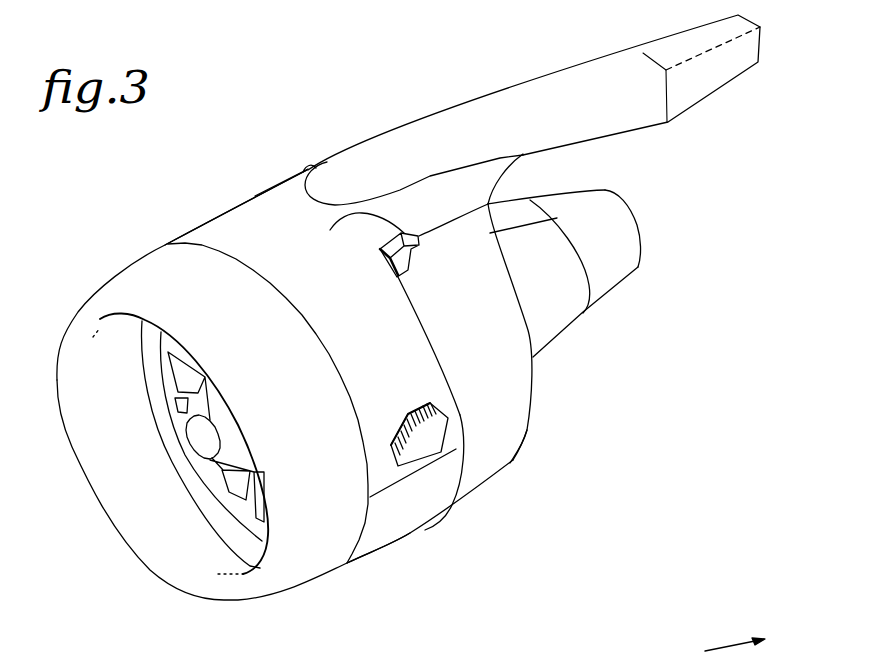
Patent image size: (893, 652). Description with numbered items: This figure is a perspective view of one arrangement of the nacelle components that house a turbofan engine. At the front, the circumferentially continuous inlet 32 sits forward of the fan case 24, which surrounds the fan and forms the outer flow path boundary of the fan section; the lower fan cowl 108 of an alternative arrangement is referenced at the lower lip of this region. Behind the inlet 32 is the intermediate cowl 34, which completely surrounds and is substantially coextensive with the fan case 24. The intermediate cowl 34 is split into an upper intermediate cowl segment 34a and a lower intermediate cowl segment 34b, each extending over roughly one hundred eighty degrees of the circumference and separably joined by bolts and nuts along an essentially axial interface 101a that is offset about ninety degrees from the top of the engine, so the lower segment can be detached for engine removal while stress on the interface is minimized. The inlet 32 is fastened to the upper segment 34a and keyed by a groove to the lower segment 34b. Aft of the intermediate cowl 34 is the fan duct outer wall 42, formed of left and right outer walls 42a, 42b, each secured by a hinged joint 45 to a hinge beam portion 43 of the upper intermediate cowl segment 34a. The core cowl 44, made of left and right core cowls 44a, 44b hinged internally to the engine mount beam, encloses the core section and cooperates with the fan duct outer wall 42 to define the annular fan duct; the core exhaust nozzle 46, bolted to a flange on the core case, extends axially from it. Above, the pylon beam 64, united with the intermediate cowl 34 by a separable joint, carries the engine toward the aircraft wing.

The fan case 24 is at (426, 436).
The inlet 32 is at (157, 535).
The intermediate cowl 34 is at (420, 545).
The upper intermediate cowl segment 34a is at (371, 337).
The lower intermediate cowl segment 34b is at (432, 513).
The fan duct outer wall 42 is at (508, 472).
The left outer wall 42a is at (520, 452).
The right outer wall 42b is at (292, 181).
The hinge beam portion 43 is at (462, 190).
The core cowl 44 is at (583, 313).
The left core cowl 44a is at (543, 325).
The right core cowl 44b is at (527, 210).
The hinged joint 45 is at (308, 183).
The core exhaust nozzle 46 is at (617, 231).
The pylon beam 64 is at (623, 110).
The axial interface 101a is at (442, 453).
The lower fan cowl 108 is at (273, 580).